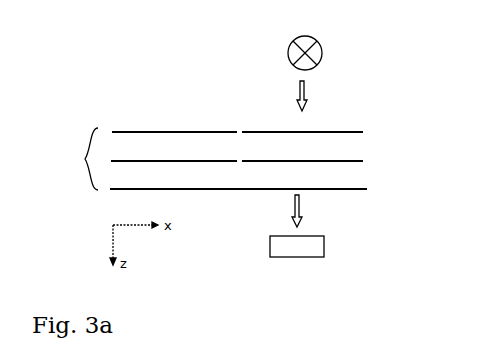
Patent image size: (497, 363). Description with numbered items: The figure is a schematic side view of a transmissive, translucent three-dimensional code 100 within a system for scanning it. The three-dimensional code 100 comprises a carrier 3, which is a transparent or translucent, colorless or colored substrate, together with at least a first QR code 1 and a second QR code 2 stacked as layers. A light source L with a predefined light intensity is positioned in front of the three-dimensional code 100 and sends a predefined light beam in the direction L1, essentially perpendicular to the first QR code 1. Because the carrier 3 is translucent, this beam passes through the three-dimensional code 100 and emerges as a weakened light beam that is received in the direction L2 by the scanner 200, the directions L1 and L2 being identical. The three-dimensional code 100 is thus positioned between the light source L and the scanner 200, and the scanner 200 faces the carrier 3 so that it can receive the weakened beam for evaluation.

The light source L is at (322, 51).
The direction of the sent light beam L1 is at (316, 96).
The direction of the received light beam L2 is at (310, 211).
The 3D-Code 100 is at (70, 159).
The first QR code 1 is at (370, 133).
The second QR code 2 is at (370, 162).
The carrier 3 is at (370, 190).
The scanner 200 is at (263, 253).